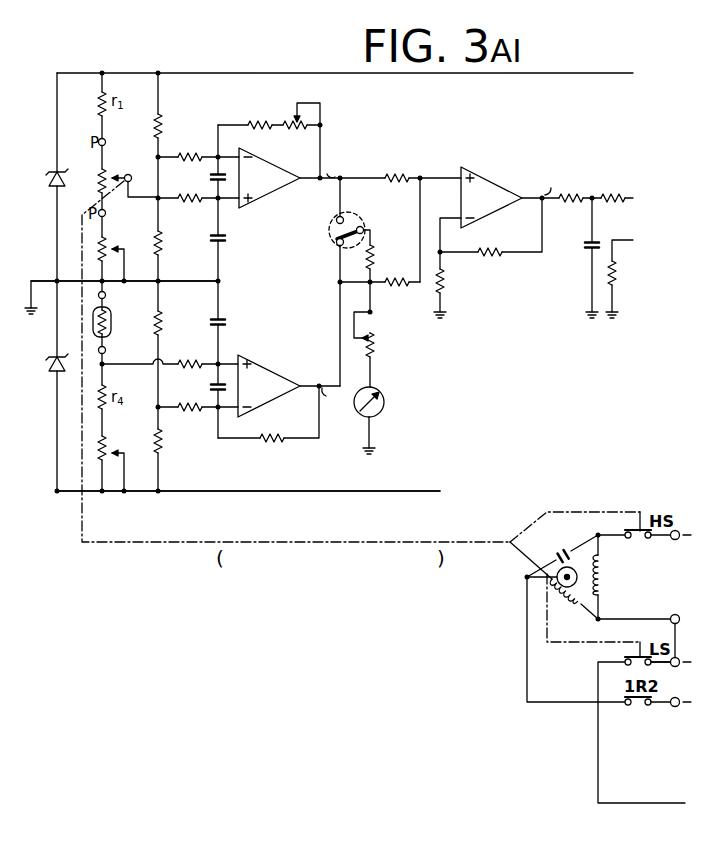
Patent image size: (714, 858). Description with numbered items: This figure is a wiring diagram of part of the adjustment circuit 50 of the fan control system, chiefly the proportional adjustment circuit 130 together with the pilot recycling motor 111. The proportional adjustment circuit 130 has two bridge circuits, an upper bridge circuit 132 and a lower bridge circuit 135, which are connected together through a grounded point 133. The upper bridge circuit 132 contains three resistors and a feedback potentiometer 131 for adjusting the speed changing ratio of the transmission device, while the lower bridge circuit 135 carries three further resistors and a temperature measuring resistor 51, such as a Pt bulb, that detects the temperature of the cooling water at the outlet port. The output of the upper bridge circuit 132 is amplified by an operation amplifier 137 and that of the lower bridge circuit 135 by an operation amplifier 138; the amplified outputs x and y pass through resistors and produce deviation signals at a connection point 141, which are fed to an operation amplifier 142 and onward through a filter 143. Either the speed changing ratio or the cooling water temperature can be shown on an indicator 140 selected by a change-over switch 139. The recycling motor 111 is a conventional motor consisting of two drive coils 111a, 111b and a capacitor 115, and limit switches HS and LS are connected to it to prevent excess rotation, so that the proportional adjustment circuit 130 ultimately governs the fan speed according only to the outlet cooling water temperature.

The adjustment circuit 50 is at (247, 648).
The temperature measuring resistor 51 is at (115, 334).
The recycling motor 111 is at (574, 585).
The drive coil 111a is at (603, 572).
The drive coil 111b is at (566, 608).
The capacitor 115 is at (574, 544).
The proportional adjustment circuit 130 is at (500, 463).
The feedback potentiometer 131 is at (124, 167).
The upper bridge circuit 132 is at (193, 100).
The grounded point 133 is at (160, 283).
The lower bridge circuit 135 is at (216, 492).
The operation amplifier 137 is at (263, 192).
The operation amplifier 138 is at (285, 369).
The change-over switch 139 is at (330, 244).
The indicator 140 is at (383, 404).
The connection point 141 is at (431, 169).
The operation amplifier 142 is at (511, 178).
The filter 143 is at (583, 212).